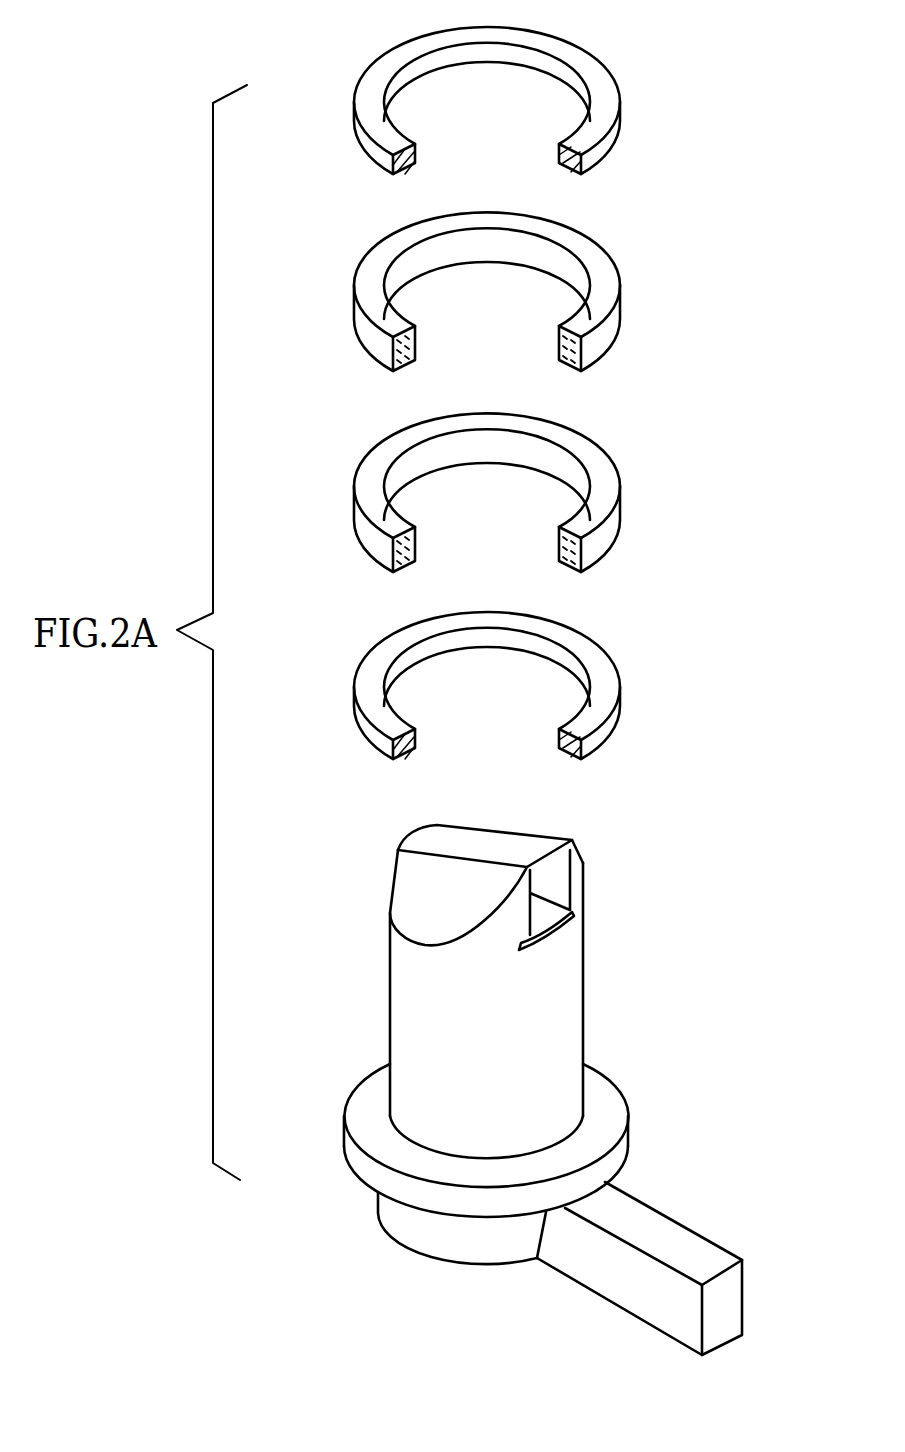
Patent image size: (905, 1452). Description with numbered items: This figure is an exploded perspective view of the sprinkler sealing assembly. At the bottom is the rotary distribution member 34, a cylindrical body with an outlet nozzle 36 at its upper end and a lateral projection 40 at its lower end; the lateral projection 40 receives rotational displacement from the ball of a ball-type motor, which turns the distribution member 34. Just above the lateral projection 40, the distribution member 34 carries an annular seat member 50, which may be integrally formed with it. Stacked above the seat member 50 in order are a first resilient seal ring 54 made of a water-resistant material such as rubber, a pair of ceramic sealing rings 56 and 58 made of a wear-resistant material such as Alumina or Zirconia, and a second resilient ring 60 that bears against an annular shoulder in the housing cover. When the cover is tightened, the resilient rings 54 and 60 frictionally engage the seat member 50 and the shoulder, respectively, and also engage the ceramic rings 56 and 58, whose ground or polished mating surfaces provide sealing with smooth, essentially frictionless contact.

The rotary distribution member 34 is at (584, 993).
The outlet nozzle 36 is at (562, 888).
The lateral projection 40 is at (642, 1290).
The annular seat member 50 is at (358, 1150).
The first resilient seal ring 54 is at (600, 742).
The ceramic sealing ring 56 is at (603, 546).
The ceramic sealing ring 58 is at (598, 352).
The second resilient ring 60 is at (603, 150).